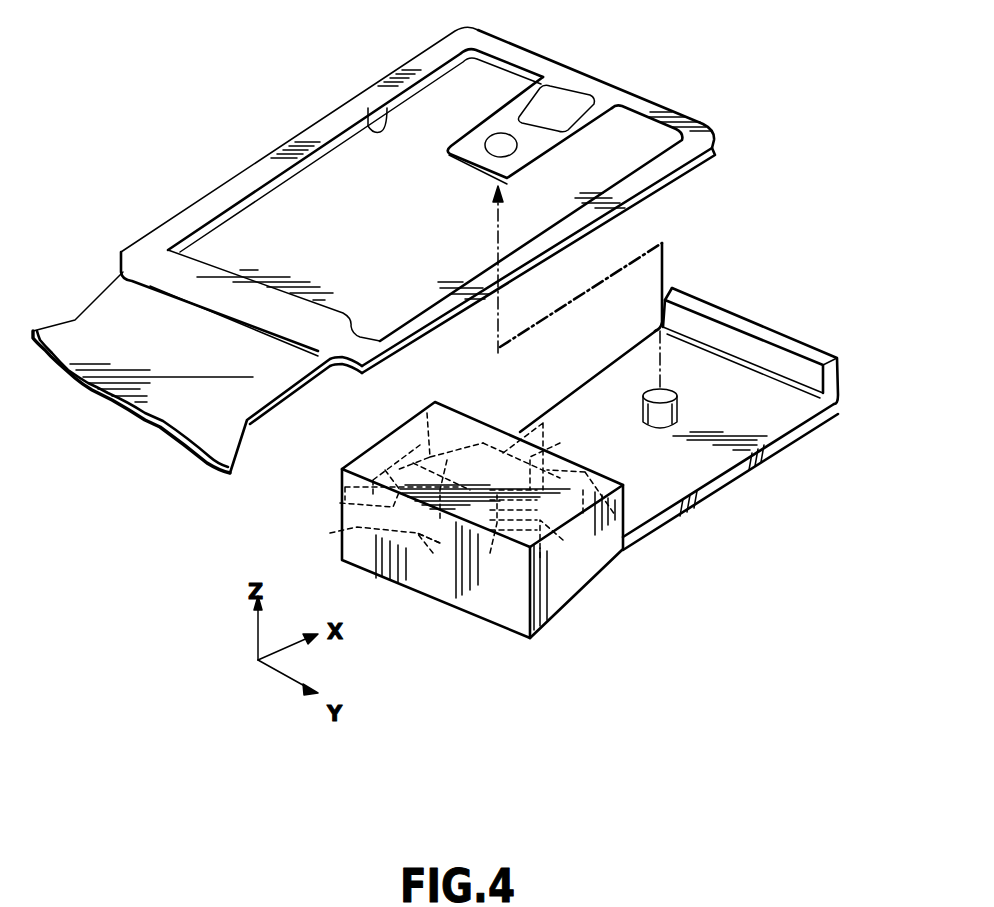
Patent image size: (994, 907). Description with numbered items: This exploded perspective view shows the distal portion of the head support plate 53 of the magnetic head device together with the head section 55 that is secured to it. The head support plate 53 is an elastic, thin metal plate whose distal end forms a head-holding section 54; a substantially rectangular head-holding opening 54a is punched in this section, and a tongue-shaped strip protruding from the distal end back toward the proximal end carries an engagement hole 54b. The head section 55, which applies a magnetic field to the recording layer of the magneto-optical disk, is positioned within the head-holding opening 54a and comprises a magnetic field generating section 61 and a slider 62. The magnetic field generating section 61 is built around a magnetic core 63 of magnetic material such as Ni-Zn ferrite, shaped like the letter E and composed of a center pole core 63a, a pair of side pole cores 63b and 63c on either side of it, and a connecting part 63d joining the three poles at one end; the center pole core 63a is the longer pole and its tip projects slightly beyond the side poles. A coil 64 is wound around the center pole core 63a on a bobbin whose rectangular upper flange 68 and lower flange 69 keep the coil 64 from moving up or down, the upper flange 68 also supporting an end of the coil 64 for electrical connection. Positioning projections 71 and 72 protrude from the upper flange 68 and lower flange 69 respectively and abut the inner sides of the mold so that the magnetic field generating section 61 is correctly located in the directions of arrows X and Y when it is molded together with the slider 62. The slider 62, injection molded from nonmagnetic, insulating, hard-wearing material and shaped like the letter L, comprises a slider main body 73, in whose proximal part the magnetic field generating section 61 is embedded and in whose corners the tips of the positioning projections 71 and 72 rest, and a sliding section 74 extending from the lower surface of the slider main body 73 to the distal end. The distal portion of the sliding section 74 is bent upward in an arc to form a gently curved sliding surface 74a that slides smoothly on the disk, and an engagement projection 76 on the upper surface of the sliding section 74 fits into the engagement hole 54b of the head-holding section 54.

The head support plate 53 is at (247, 424).
The head-holding section 54 is at (523, 43).
The head-holding opening 54a is at (382, 126).
The engagement hole 54b is at (497, 147).
The head section 55 is at (528, 639).
The magnetic field generating section 61 is at (483, 443).
The slider 62 is at (740, 483).
The magnetic core 63 is at (560, 443).
The center pole core 63a is at (490, 553).
The side pole core 63b is at (433, 553).
The side pole core 63c is at (585, 472).
The connecting part 63d is at (543, 423).
The coil 64 is at (563, 540).
The upper flange 68 is at (447, 460).
The lower flange 69 is at (340, 503).
The positioning projection 71 is at (373, 480).
The positioning projection 72 is at (330, 533).
The slider main body 73 is at (340, 487).
The sliding section 74 is at (290, 223).
The sliding surface 74a is at (797, 437).
The engagement projection 76 is at (680, 410).